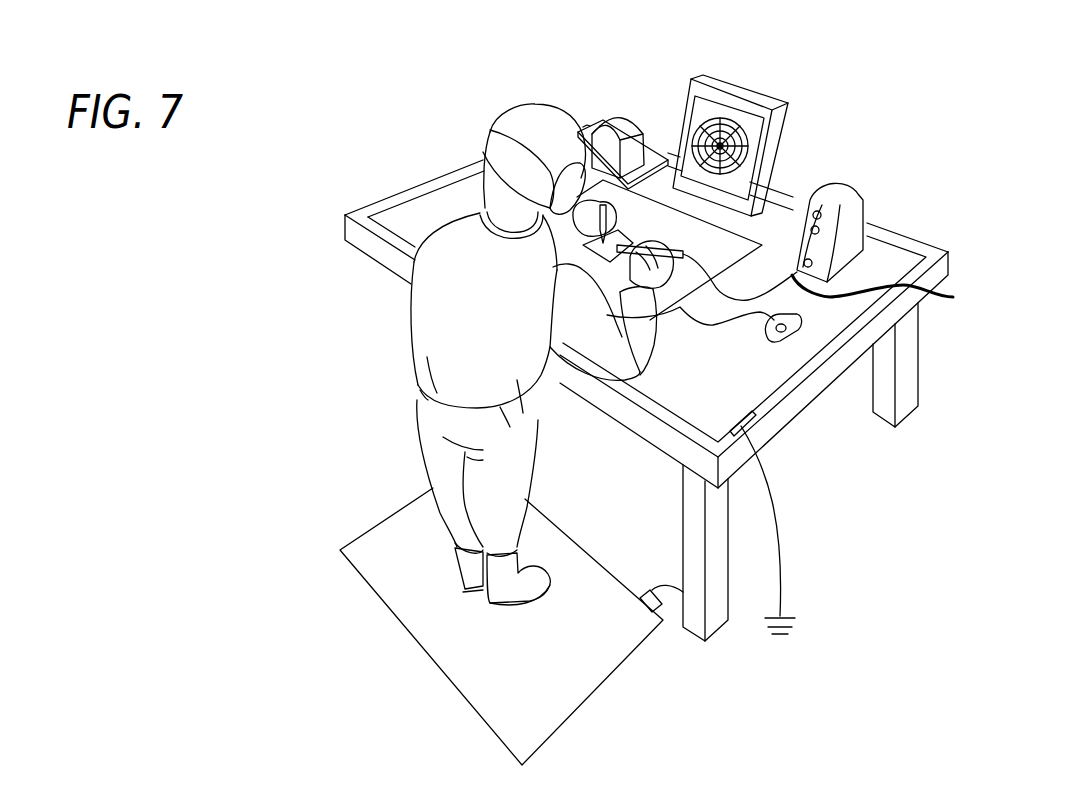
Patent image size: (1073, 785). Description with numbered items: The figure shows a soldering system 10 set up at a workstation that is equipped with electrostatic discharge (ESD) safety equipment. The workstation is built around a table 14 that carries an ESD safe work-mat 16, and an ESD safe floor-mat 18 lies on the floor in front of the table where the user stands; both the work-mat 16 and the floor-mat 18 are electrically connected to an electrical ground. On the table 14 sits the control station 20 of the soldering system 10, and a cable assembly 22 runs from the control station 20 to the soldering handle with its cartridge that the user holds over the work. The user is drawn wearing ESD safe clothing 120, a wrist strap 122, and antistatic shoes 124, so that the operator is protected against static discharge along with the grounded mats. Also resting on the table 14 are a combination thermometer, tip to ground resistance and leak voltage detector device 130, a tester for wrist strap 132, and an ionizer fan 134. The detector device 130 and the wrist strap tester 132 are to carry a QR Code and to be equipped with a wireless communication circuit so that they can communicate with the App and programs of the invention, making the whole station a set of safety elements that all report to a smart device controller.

The soldering system 10 is at (312, 277).
The table 14 is at (780, 432).
The ESD safe work-mat 16 is at (807, 368).
The ESD safe floor-mat 18 is at (610, 677).
The control station 20 is at (860, 205).
The cable assembly 22 is at (891, 293).
The ESD safe clothing 120 is at (517, 200).
The wrist strap 122 is at (545, 250).
The antistatic shoes 124 is at (487, 598).
The combination thermometer, tip to ground resistance and leak voltage detector devi 130 is at (640, 128).
The tester for wrist strap 132 is at (800, 327).
The ionizer fan 134 is at (750, 90).